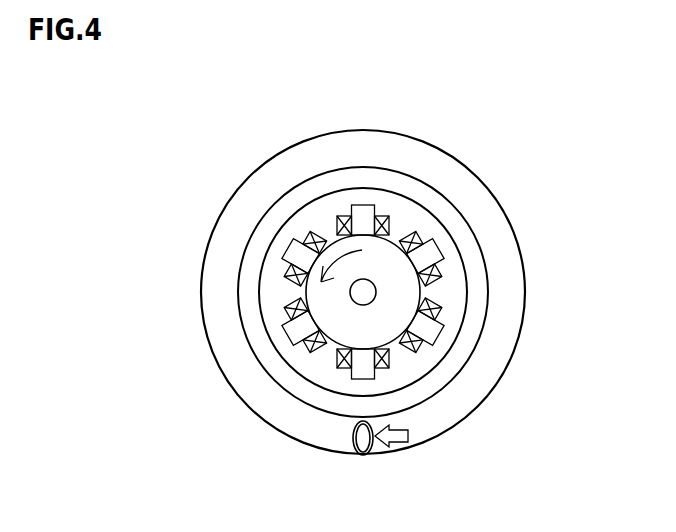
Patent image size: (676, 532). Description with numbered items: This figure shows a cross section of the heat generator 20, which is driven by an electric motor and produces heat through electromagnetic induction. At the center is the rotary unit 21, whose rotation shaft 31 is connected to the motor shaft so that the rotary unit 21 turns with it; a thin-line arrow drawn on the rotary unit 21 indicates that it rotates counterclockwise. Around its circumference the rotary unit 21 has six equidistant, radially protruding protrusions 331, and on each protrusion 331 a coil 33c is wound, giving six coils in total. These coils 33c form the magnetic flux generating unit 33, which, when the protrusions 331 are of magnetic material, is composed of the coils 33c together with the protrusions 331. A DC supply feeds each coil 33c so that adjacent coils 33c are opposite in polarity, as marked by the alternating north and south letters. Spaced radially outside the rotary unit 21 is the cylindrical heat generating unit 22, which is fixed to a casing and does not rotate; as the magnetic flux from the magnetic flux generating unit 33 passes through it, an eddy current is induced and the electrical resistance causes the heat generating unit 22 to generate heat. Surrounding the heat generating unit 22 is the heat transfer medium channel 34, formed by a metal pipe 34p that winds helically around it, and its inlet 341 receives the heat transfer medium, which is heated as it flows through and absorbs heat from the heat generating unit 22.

The heat generator 20 is at (208, 117).
The rotary unit 21 is at (437, 293).
The heat generating unit 22 is at (250, 243).
The rotation shaft 31 is at (375, 302).
The magnetic flux generating unit 33 is at (444, 292).
The coil 33c is at (440, 267).
The protrusion 331 is at (437, 245).
The heat transfer medium channel 34 is at (384, 277).
The pipe 34p is at (568, 130).
The inlet 341 is at (370, 457).